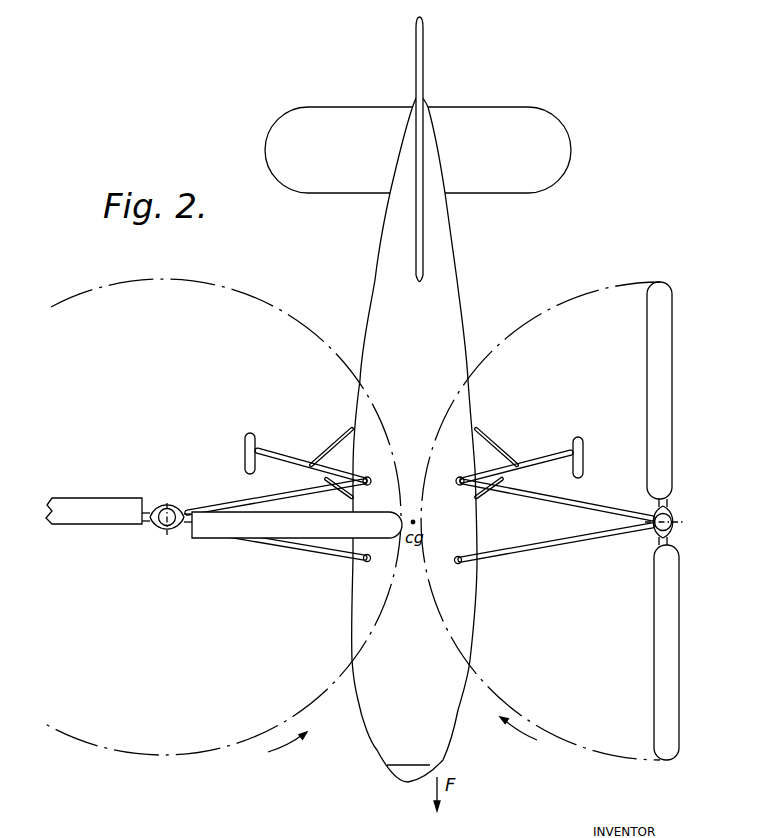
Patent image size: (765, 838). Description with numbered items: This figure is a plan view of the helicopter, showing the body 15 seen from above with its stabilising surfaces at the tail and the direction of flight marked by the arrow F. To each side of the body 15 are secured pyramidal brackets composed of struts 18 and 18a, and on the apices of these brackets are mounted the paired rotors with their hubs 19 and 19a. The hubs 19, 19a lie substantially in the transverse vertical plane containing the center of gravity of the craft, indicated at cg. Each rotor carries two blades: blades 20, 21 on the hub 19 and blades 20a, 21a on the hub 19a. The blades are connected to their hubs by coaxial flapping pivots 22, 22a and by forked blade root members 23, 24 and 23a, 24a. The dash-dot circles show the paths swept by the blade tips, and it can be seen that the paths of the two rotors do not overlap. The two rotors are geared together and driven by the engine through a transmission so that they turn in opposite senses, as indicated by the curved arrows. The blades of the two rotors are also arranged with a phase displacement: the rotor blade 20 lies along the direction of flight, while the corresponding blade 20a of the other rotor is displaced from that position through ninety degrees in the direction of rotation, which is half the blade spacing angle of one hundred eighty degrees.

The body 15 is at (414, 438).
The struts 18 is at (555, 500).
The struts 18a is at (268, 497).
The hub 19 is at (652, 508).
The hub 19a is at (170, 510).
The blade 20 is at (662, 678).
The blade 20a is at (227, 523).
The blade 21 is at (658, 380).
The blade 21a is at (92, 505).
The coaxial flapping pivots 22 is at (661, 538).
The coaxial flapping pivots 22a is at (163, 507).
The forked blade root member 23 is at (673, 527).
The forked blade root member 23a is at (177, 528).
The forked blade root member 24 is at (670, 513).
The forked blade root member 24a is at (153, 523).